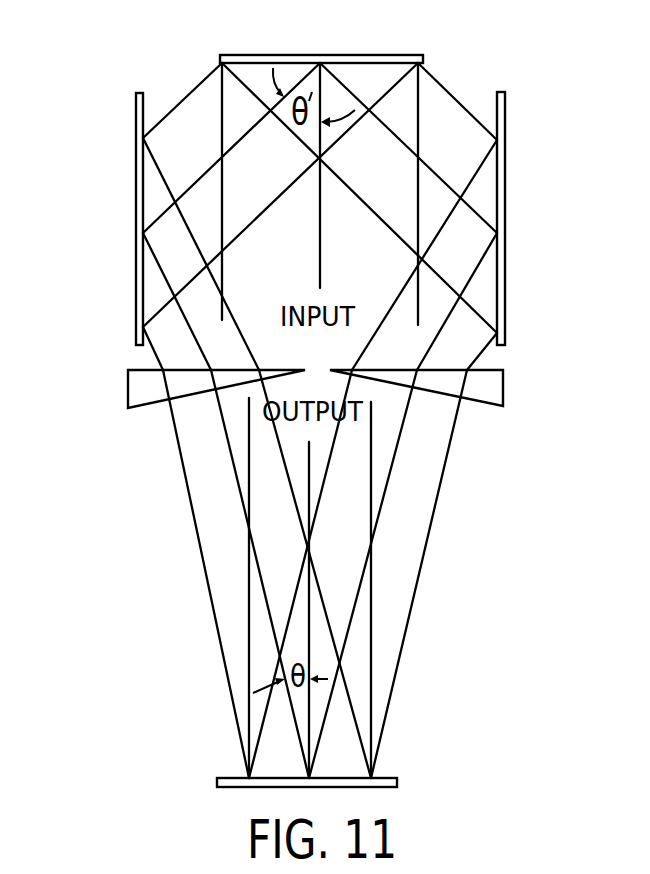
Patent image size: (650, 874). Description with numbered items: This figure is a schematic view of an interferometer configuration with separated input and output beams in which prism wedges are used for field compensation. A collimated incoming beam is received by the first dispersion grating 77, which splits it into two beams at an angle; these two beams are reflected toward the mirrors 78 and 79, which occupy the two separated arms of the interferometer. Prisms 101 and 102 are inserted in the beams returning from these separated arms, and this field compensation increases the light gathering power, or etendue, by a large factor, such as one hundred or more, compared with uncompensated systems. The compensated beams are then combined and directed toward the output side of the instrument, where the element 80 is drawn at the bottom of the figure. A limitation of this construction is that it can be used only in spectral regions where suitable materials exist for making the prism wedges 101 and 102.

The first dispersion grating 77 is at (392, 56).
The mirror 78 is at (136, 208).
The mirror 79 is at (505, 192).
The output mirror 80 is at (231, 778).
The prism wedge 101 is at (128, 392).
The prism wedge 102 is at (503, 392).